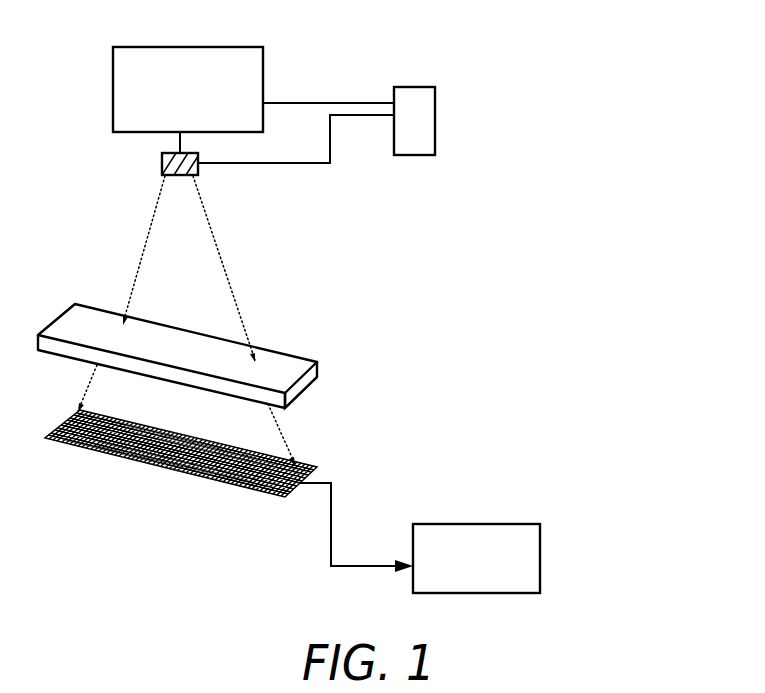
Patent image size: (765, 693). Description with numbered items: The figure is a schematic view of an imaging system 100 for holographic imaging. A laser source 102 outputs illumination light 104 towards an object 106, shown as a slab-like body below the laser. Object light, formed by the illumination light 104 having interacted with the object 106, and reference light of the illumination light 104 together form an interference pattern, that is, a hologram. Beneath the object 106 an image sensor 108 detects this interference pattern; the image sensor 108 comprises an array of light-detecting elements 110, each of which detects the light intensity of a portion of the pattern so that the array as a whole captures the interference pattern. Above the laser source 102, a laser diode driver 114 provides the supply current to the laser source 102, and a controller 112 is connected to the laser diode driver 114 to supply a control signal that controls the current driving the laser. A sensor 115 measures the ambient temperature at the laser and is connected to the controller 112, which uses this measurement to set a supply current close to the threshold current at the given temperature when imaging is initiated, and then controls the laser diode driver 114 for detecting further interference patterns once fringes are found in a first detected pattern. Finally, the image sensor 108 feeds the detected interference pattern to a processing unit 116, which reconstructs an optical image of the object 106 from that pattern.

The imaging system 100 is at (548, 116).
The laser source 102 is at (162, 162).
The illumination light 104 is at (242, 313).
The object 106 is at (308, 378).
The image sensor 108 is at (344, 462).
The light-detecting elements 110 is at (258, 493).
The controller 112 is at (412, 87).
The laser diode driver 114 is at (263, 80).
The sensor 115 is at (202, 175).
The processing unit 116 is at (505, 524).